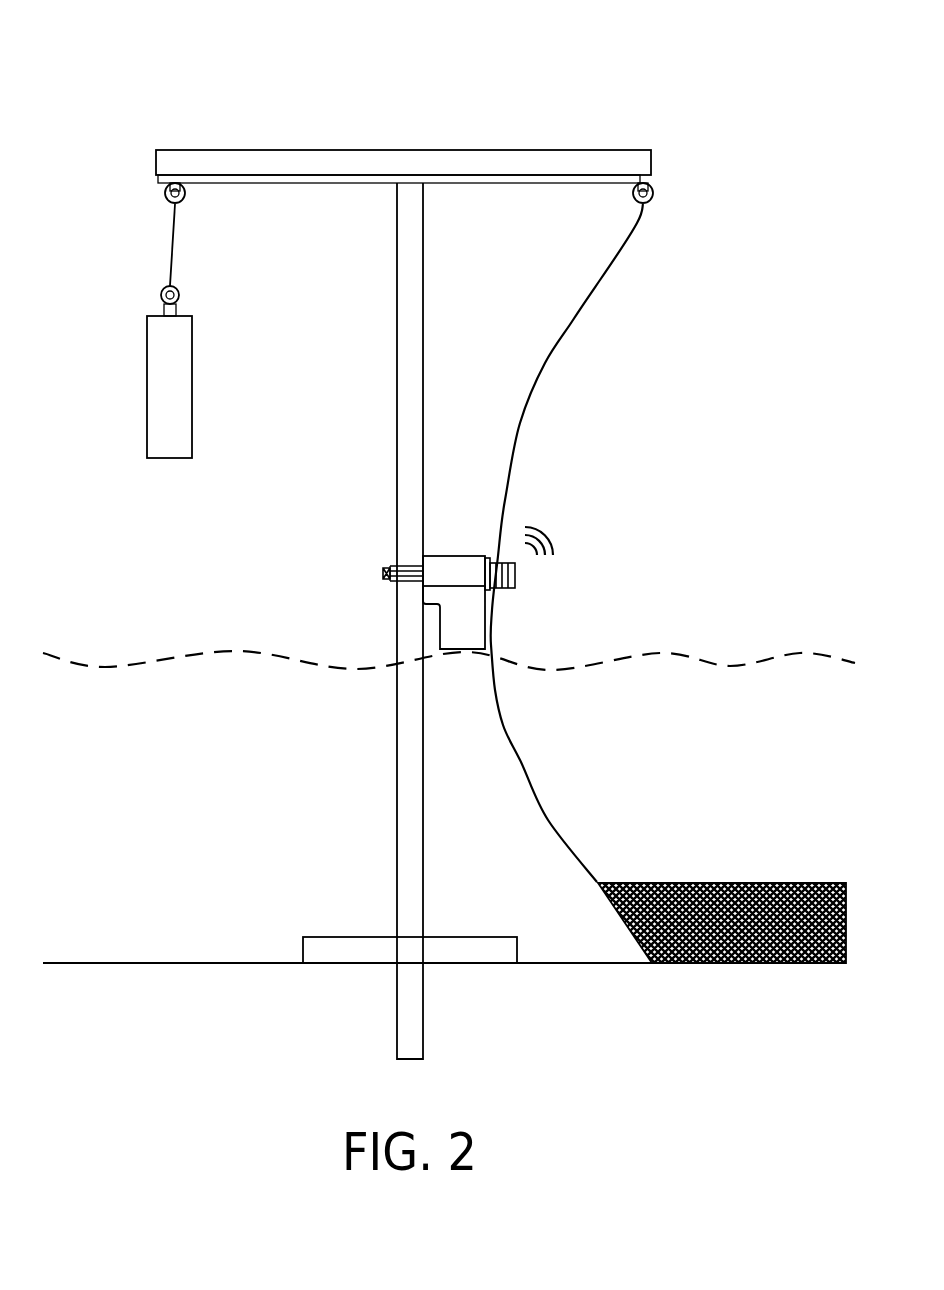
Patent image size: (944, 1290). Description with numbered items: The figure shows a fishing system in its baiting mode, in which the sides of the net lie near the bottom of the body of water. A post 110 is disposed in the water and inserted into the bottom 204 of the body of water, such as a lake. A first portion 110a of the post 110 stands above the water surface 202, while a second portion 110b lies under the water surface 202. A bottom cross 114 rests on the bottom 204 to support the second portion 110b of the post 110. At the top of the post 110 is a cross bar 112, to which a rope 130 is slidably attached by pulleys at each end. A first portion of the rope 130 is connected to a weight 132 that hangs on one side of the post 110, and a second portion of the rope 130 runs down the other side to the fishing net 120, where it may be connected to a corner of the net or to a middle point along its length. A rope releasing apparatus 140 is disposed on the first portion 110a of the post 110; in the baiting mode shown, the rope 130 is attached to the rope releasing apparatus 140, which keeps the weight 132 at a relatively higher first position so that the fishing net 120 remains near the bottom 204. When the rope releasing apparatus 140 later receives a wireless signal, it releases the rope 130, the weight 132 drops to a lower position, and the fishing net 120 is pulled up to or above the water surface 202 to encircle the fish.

The post 110 is at (188, 92).
The cross bar 112 is at (475, 153).
The first portion of the post 110a is at (417, 263).
The second portion of the post 110b is at (403, 746).
The bottom cross 114 is at (366, 937).
The rope 130 is at (637, 227).
The weight 132 is at (183, 405).
The rope releasing apparatus 140 is at (453, 563).
The fishing net 120 is at (662, 882).
The water surface 202 is at (660, 653).
The bottom of the body of water 204 is at (182, 962).